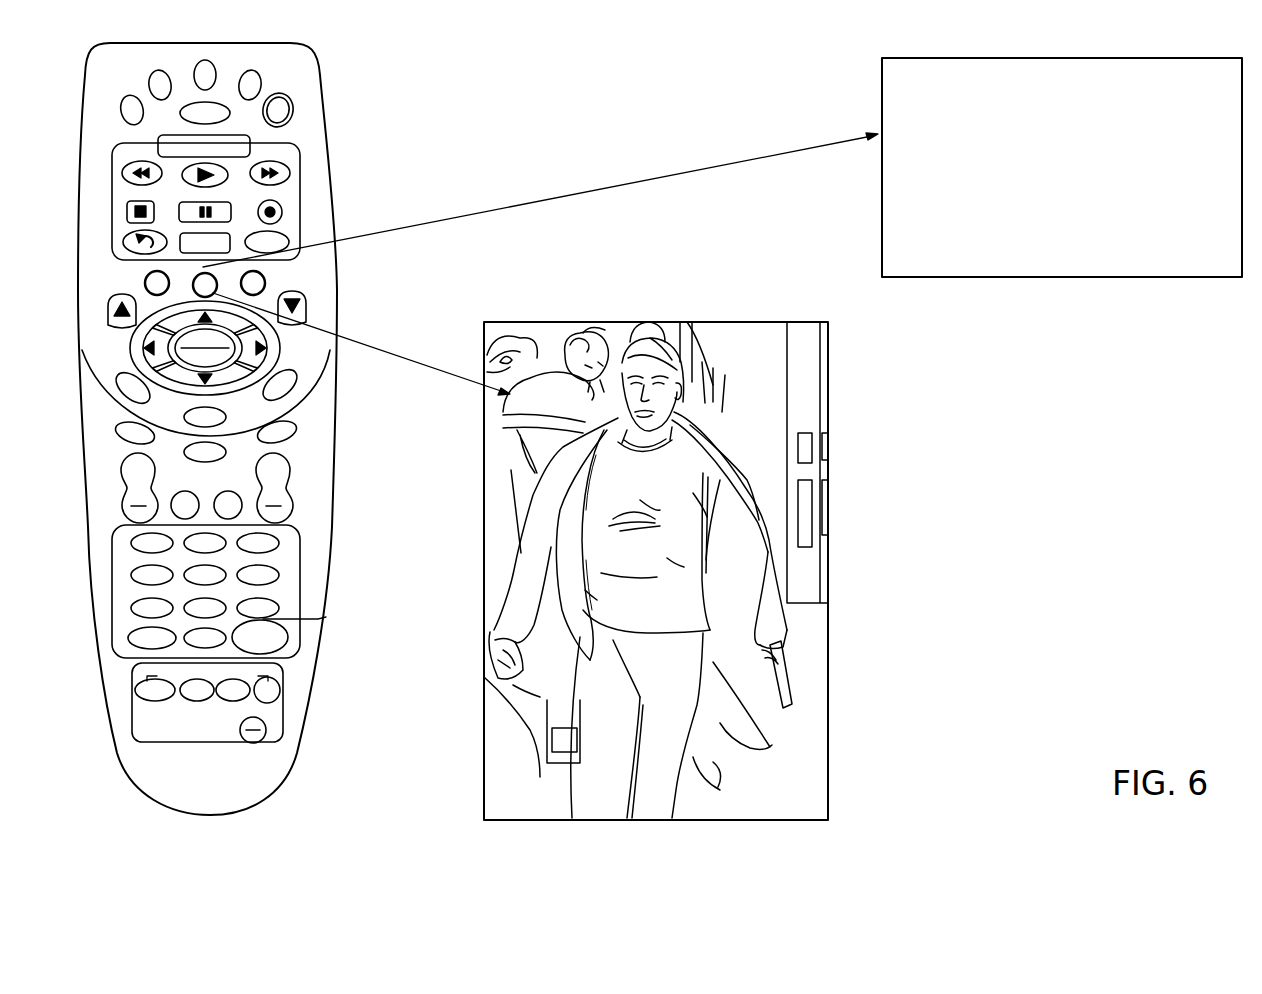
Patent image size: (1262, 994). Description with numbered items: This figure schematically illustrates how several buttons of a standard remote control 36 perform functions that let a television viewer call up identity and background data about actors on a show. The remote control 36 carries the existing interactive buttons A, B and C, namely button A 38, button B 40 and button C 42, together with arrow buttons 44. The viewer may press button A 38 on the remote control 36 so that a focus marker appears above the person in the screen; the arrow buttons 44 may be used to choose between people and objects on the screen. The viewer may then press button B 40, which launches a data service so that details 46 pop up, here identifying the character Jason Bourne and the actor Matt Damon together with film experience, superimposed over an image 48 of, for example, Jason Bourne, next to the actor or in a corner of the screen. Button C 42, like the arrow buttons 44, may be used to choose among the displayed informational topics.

The remote control 36 is at (376, 689).
The button A 38 is at (145, 283).
The button B 40 is at (203, 273).
The button C 42 is at (266, 283).
The arrow buttons 44 is at (171, 389).
The details 46 is at (1108, 278).
The image 48 is at (872, 694).